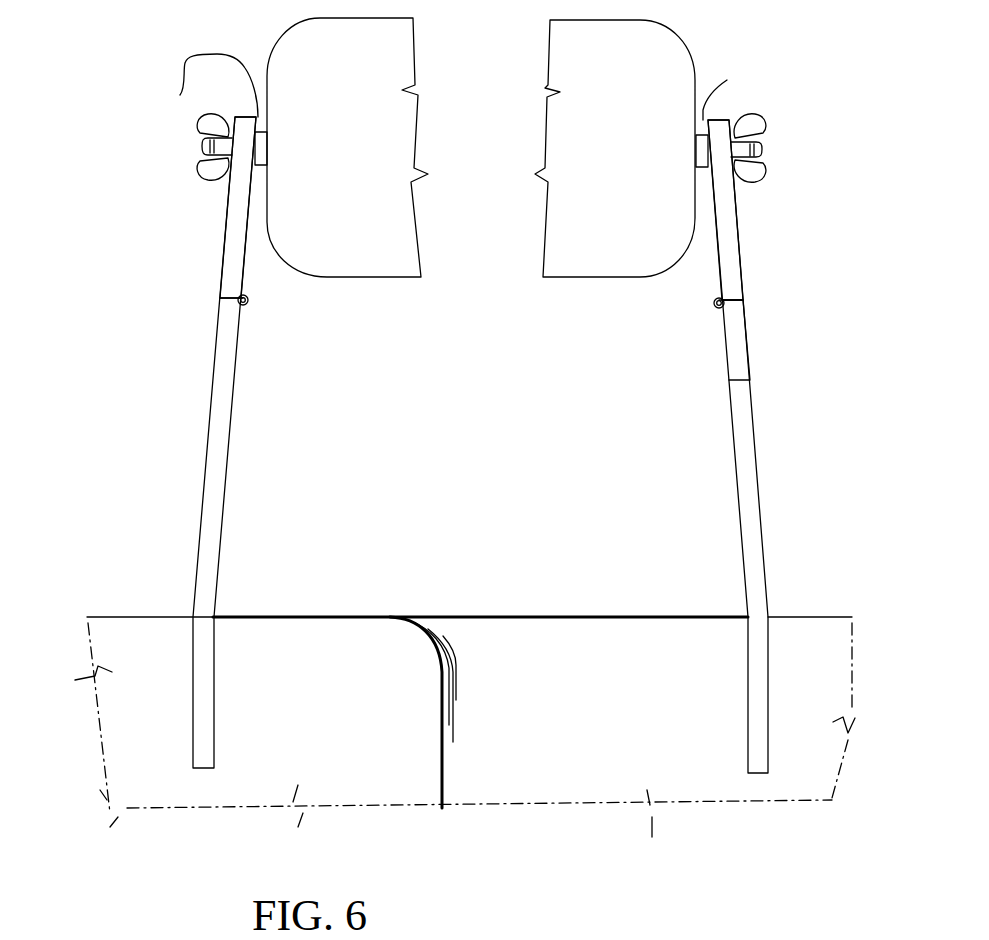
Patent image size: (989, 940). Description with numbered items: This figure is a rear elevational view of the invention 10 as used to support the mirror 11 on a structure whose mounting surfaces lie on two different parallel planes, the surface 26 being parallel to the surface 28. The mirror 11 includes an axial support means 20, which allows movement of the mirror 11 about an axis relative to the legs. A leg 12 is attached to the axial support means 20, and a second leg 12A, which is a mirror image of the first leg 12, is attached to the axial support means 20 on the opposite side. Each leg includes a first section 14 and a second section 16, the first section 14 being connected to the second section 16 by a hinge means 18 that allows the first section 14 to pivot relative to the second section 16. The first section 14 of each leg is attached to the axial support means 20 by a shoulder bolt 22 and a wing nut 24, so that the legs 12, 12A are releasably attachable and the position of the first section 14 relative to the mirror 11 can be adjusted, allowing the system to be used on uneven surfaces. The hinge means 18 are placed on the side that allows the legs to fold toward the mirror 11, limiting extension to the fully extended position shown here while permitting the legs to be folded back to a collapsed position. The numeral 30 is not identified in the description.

The invention 10 is at (140, 547).
The mirror 11 is at (365, 160).
The leg 12 is at (199, 433).
The second leg 12A is at (765, 475).
The first section 14 is at (224, 271).
The second section 16 is at (749, 326).
The hinge means 18 is at (247, 306).
The axial support means 20 is at (200, 140).
The shoulder bolt 22 is at (180, 95).
The wing nut 24 is at (232, 162).
The surface 26 is at (347, 769).
The surface 28 is at (607, 711).
The fastener 30 is at (215, 696).